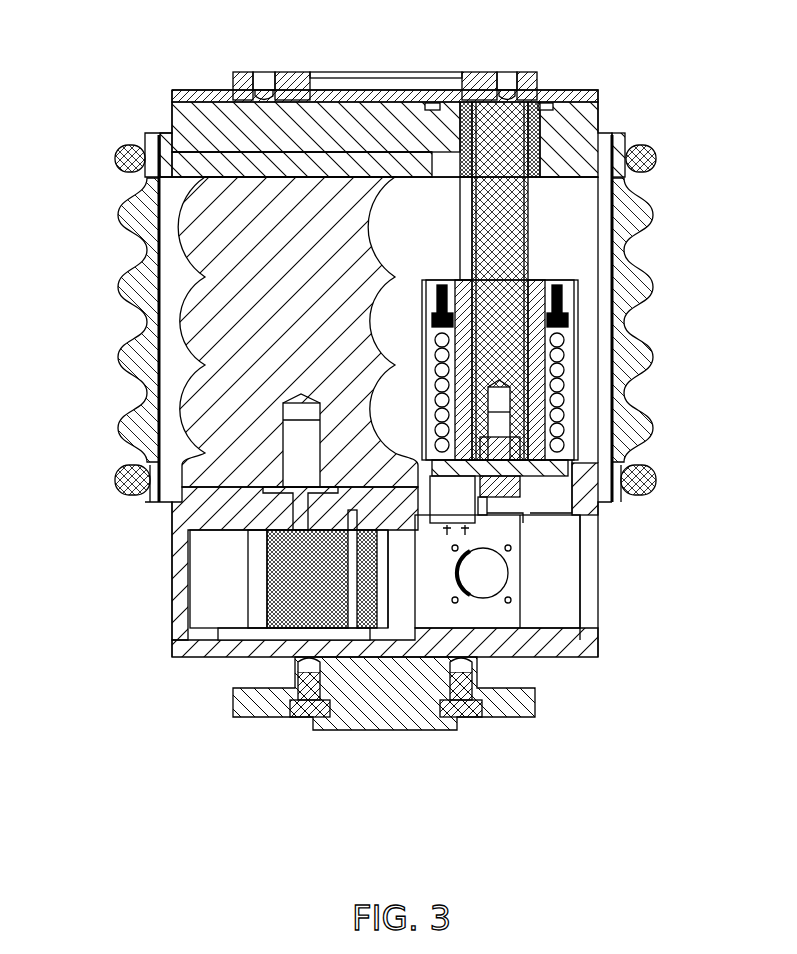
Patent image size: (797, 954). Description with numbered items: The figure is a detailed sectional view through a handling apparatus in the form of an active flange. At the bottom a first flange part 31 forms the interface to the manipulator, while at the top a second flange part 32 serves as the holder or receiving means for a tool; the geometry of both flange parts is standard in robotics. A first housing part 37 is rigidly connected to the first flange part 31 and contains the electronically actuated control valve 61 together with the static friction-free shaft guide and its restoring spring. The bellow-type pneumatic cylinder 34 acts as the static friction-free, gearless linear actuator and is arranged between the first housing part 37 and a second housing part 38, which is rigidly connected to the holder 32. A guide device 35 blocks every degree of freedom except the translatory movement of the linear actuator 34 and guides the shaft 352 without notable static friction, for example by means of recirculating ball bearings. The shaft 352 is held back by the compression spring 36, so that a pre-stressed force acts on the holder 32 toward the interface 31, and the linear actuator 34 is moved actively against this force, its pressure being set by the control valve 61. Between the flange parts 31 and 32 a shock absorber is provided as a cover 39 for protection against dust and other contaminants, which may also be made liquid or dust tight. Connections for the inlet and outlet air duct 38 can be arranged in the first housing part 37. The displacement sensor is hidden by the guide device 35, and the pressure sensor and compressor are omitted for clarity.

The first flange part 31 is at (380, 700).
The second flange part 32 is at (243, 72).
The bellow-type pneumatic cylinder 34 is at (182, 297).
The guide device 35 is at (530, 223).
The shaft 352 is at (513, 207).
The compression spring 36 is at (557, 383).
The first housing part 37 is at (203, 515).
The second housing part 38 is at (212, 118).
The cover 39 is at (125, 438).
The control valve 61 is at (277, 578).